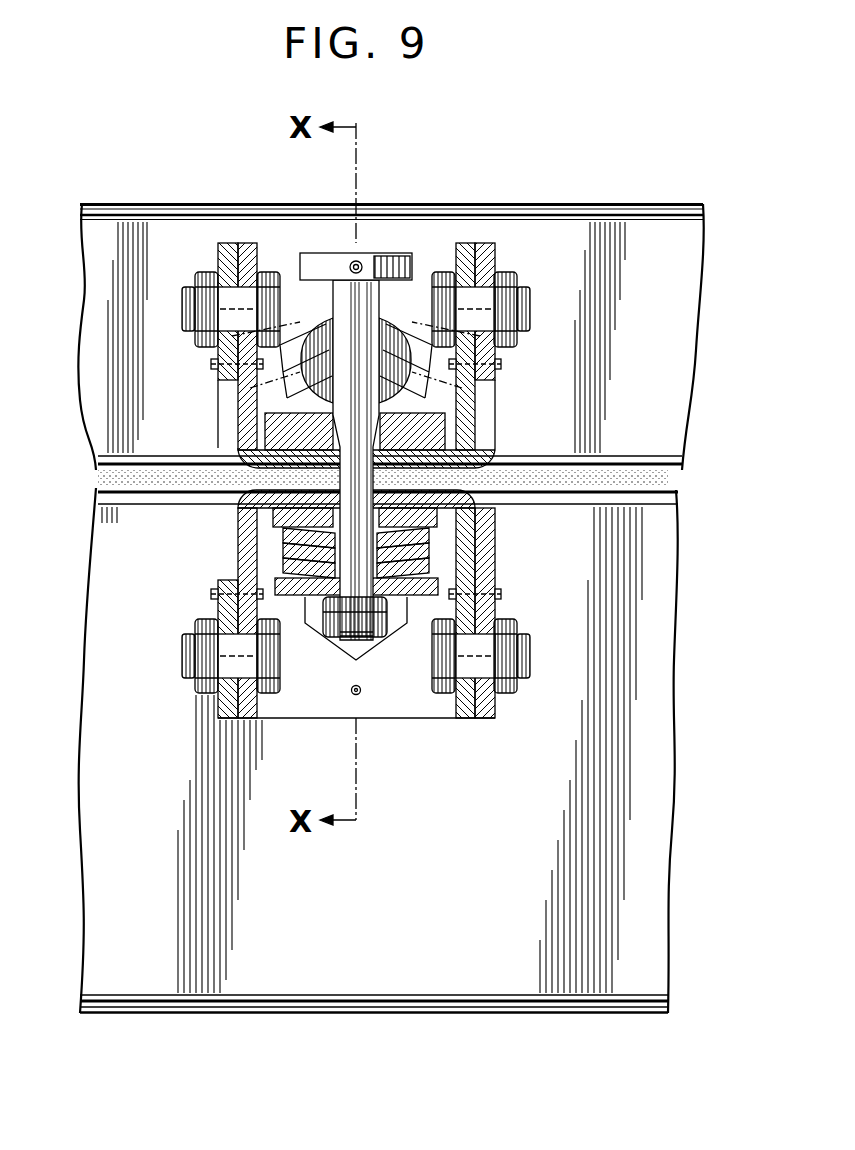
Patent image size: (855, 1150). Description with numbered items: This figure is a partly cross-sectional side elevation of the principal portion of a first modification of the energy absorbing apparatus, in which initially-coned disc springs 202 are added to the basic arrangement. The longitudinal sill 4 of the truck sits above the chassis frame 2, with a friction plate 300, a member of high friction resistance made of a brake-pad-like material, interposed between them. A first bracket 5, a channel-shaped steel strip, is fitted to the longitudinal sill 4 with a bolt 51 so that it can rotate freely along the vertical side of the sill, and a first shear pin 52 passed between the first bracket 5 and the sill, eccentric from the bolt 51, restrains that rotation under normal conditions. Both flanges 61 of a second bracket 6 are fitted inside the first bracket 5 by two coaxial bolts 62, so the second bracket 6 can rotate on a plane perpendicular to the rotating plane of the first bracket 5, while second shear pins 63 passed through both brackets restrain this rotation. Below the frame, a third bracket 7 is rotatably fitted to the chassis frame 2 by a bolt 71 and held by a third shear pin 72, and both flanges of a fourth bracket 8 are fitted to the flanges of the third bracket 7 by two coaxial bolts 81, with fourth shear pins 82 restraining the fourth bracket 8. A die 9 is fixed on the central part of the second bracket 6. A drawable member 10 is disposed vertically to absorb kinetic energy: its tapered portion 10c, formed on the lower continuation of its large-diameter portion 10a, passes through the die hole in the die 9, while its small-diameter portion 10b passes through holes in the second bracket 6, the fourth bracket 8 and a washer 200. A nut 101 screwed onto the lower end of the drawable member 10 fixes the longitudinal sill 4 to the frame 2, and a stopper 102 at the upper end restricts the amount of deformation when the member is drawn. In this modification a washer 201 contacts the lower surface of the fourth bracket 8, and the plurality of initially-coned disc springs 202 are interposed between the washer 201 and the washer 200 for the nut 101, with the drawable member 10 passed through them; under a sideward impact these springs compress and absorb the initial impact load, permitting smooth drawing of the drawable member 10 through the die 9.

The chassis frame 2 is at (368, 995).
The longitudinal sill 4 is at (637, 218).
The first bracket 5 is at (348, 320).
The second bracket 6 is at (462, 398).
The third bracket 7 is at (221, 710).
The fourth bracket 8 is at (243, 552).
The die 9 is at (456, 432).
The drawable member 10 is at (331, 424).
The large-diameter portion 10a is at (338, 310).
The small-diameter portion 10b is at (299, 431).
The tapered portion 10c is at (386, 432).
The bolt 51 is at (254, 414).
The first shear pin 52 is at (362, 258).
The flanges 61 is at (468, 244).
The bolts 62 is at (210, 292).
The second shear pins 63 is at (212, 365).
The bolt 71 is at (335, 632).
The third shear pin 72 is at (353, 697).
The bolts 81 is at (190, 647).
The fourth shear pins 82 is at (210, 597).
The nut 101 is at (377, 622).
The stopper 102 is at (396, 258).
The washer 200 is at (440, 581).
The washer 201 is at (432, 518).
The initially-coned disc springs 202 is at (283, 382).
The friction plate 300 is at (670, 478).